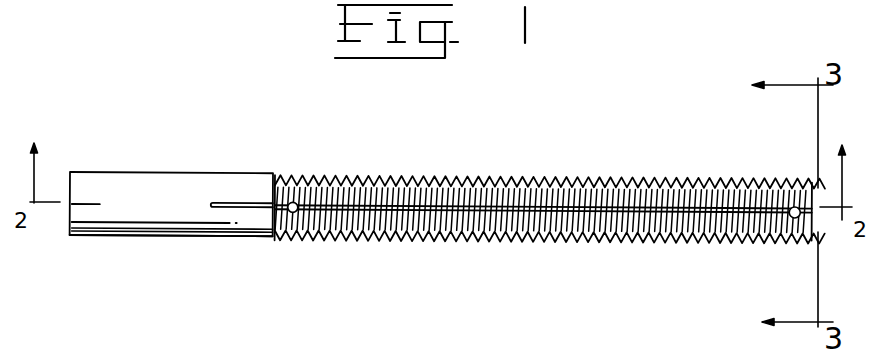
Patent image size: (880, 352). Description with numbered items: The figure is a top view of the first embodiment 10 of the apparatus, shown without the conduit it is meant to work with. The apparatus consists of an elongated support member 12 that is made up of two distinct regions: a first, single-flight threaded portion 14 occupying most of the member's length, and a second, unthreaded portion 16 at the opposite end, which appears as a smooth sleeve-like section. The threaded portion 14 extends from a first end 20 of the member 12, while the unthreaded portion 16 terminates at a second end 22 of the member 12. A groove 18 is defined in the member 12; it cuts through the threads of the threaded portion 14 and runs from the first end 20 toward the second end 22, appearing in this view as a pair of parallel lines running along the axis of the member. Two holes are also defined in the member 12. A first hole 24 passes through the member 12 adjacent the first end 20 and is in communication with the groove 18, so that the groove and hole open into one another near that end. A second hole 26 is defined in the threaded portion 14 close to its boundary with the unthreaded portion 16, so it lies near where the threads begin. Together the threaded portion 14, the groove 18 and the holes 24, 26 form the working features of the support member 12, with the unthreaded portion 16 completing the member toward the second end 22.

The first embodiment 10 is at (230, 272).
The support member 12 is at (275, 170).
The single-flight threaded portion 14 is at (500, 172).
The unthreaded portion 16 is at (172, 162).
The groove 18 is at (413, 226).
The first end 20 is at (811, 186).
The second end 22 is at (70, 229).
The first hole 24 is at (792, 229).
The second hole 26 is at (294, 201).